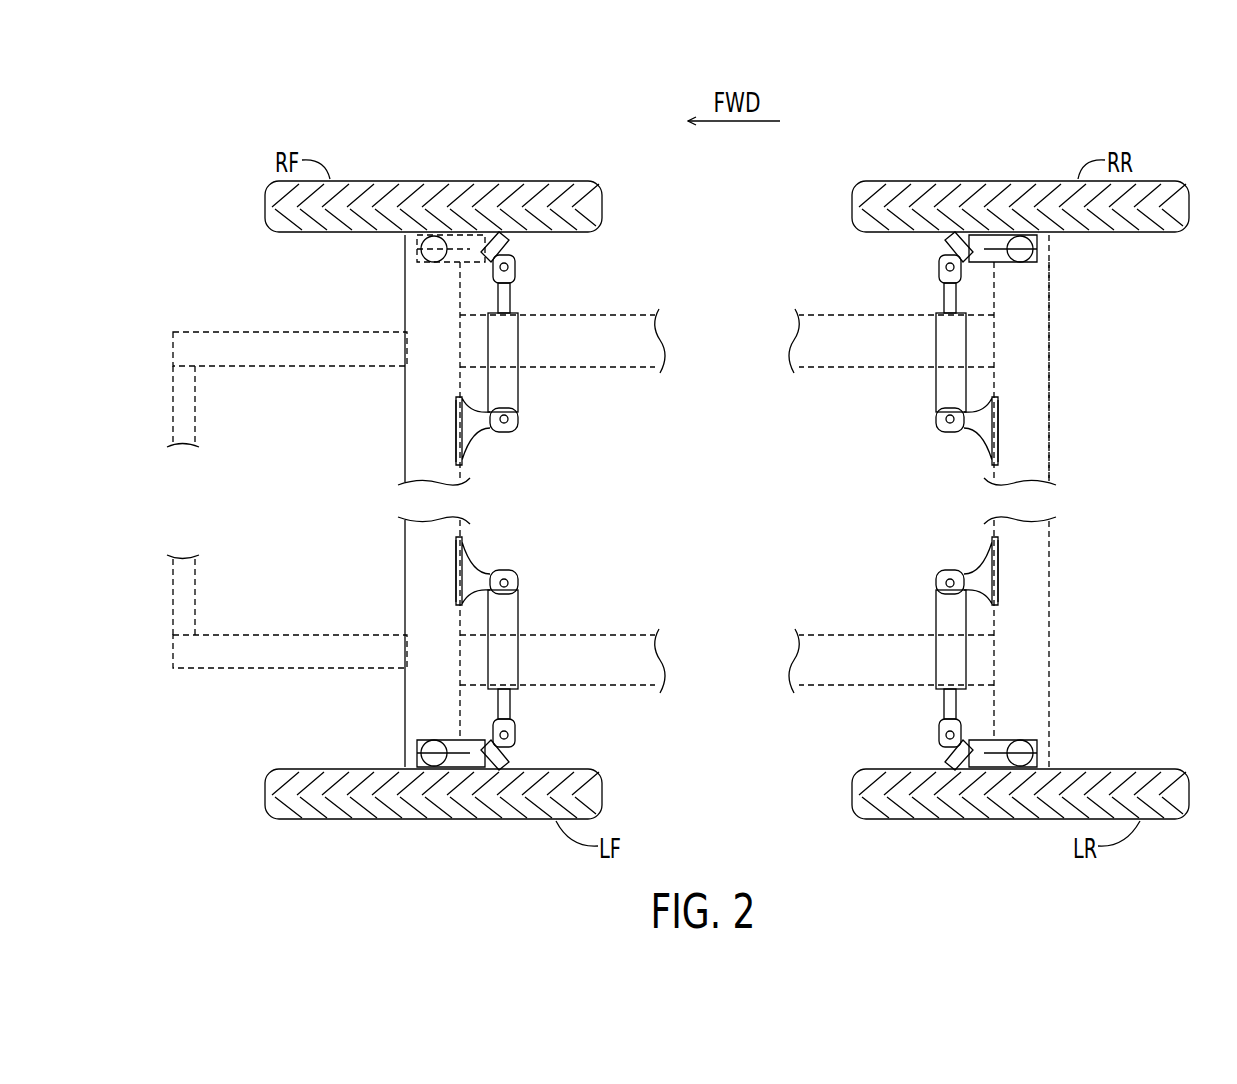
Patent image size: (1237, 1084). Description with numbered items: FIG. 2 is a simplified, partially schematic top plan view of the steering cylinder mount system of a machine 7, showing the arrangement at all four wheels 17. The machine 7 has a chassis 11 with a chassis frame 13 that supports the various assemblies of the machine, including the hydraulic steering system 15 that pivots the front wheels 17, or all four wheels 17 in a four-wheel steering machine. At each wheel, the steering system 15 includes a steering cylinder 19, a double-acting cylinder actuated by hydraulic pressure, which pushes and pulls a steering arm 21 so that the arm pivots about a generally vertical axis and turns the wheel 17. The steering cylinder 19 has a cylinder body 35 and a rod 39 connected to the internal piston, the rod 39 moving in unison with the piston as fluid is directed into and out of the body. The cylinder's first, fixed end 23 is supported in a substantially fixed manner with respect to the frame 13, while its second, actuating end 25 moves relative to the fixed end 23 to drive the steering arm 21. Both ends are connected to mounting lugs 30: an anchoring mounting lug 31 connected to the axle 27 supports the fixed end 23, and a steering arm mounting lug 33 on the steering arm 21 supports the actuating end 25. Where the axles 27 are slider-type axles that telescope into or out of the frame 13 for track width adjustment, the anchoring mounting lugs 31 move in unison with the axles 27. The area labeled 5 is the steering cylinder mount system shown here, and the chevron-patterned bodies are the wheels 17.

The suspension assembly 5 is at (646, 263).
The machine 7 is at (846, 107).
The chassis 11 is at (1188, 391).
The chassis frame 13 is at (1043, 379).
The hydraulic steering system 15 is at (611, 490).
The wheels 17 is at (344, 179).
The steering cylinder 19 is at (527, 380).
The steering arm 21 is at (490, 246).
The fixed end 23 is at (519, 427).
The actuating end 25 is at (519, 273).
The axle 27 is at (426, 296).
The mounting lugs 30 is at (481, 276).
The anchoring mounting lug 31 is at (481, 446).
The steering arm mounting lug 33 is at (467, 262).
The cylinder body 35 is at (520, 408).
The rod 39 is at (513, 303).